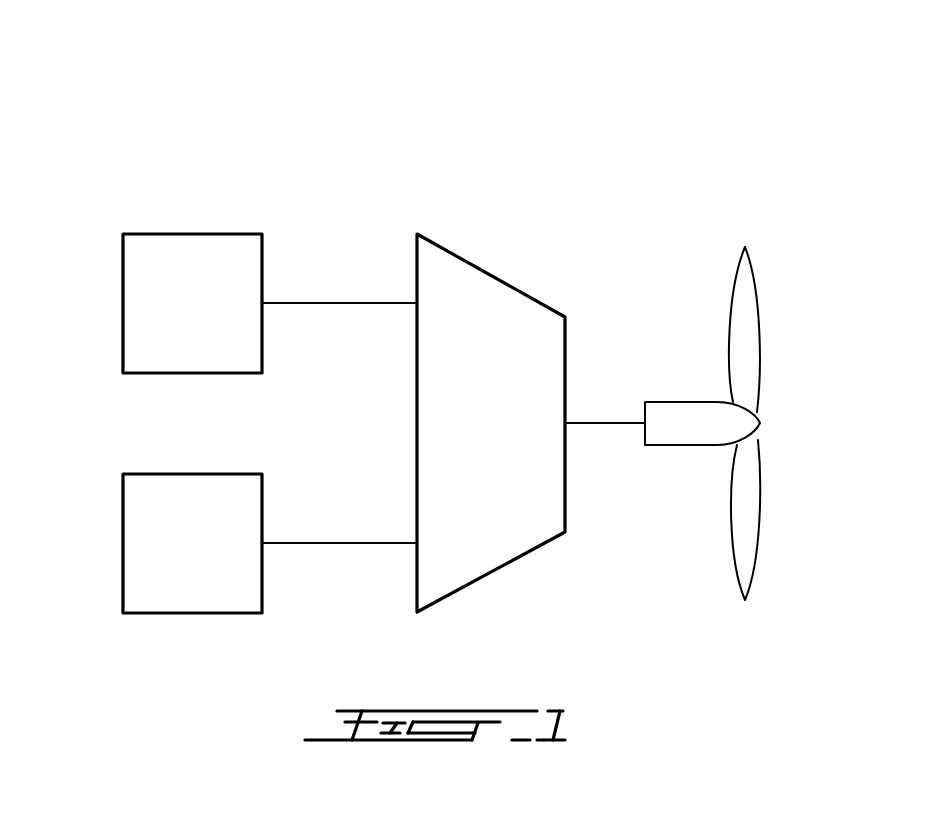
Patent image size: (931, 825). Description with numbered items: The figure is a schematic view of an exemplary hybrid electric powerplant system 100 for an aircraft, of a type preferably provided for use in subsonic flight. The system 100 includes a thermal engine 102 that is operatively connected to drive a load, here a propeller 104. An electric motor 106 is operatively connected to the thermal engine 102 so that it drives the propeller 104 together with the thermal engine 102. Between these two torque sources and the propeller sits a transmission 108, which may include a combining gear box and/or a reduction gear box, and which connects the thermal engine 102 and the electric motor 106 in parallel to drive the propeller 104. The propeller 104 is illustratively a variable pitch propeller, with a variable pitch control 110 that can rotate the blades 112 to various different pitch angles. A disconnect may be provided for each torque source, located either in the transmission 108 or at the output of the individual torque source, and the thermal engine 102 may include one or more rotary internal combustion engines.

The hybrid electric powerplant system 100 is at (163, 148).
The thermal engine 102 is at (123, 541).
The propeller 104 is at (706, 423).
The electric motor 106 is at (123, 301).
The transmission 108 is at (417, 420).
The variable pitch control 110 is at (680, 402).
The blades 112 is at (745, 298).